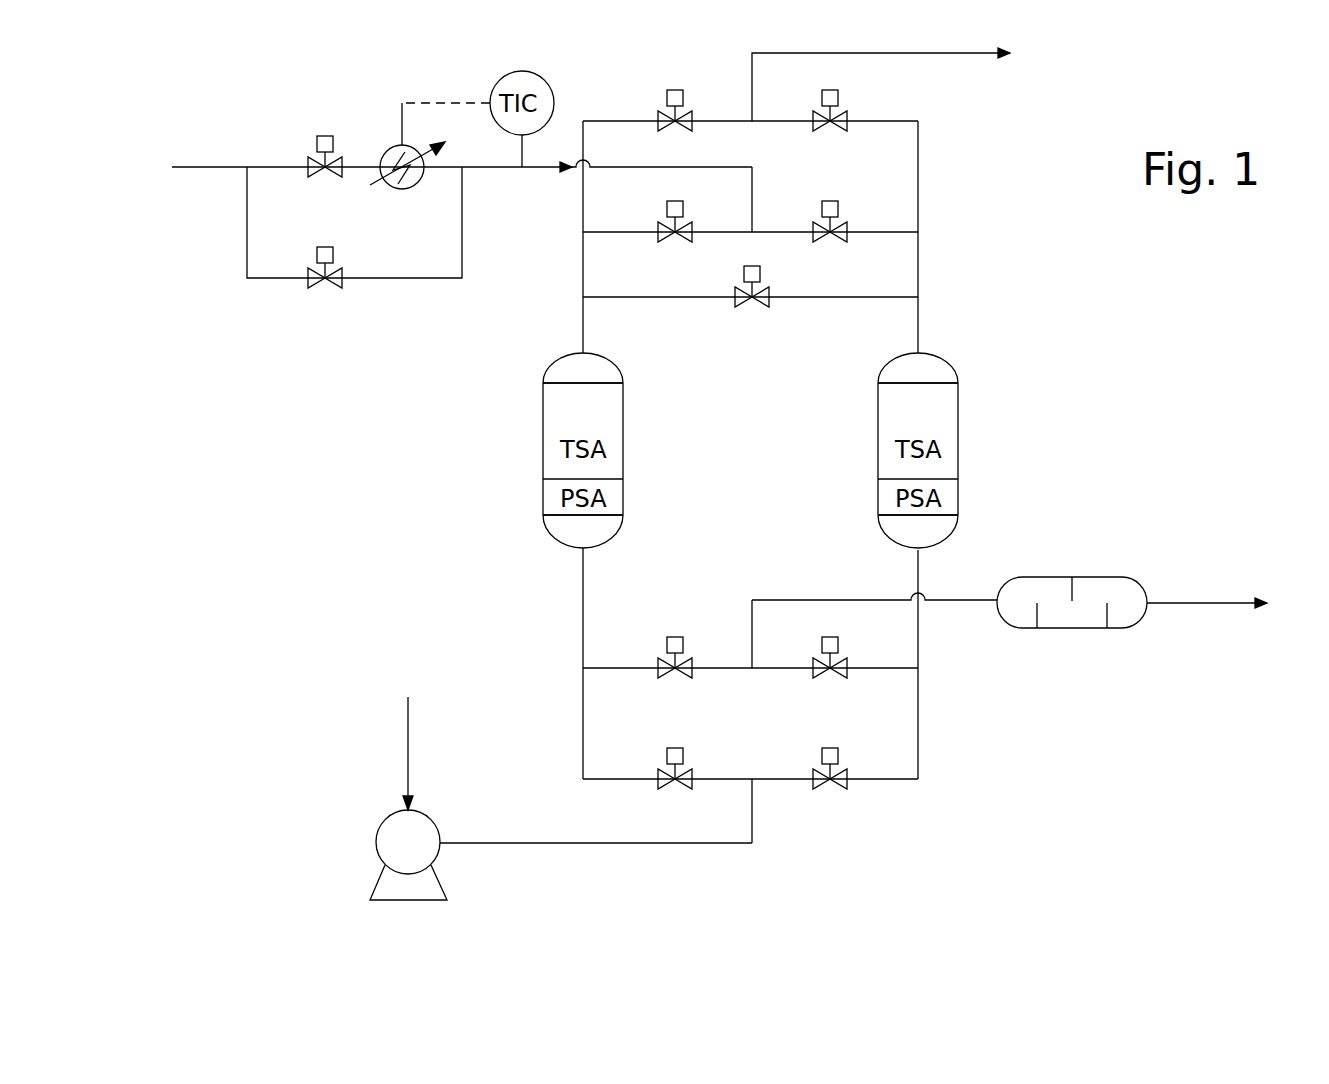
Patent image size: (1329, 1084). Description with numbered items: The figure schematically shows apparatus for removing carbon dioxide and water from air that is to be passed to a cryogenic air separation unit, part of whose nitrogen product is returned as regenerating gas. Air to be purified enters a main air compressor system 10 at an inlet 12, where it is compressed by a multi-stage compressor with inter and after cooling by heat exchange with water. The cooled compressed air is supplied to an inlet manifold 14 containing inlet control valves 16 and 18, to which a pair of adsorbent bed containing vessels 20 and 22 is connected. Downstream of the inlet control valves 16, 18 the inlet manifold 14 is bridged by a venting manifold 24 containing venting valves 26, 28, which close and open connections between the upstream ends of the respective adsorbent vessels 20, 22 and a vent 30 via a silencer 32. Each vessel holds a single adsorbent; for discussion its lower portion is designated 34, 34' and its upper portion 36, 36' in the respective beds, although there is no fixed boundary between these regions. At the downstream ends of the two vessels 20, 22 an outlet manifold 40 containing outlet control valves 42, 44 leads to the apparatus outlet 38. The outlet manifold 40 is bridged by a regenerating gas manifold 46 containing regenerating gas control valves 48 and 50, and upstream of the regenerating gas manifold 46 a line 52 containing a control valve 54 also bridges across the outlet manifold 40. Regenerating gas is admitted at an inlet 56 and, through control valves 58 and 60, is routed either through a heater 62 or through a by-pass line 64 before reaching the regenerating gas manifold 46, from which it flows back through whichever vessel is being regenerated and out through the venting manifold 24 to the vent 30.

The main air compressor system 10 is at (385, 820).
The inlet 12 is at (408, 710).
The inlet manifold 14 is at (868, 780).
The inlet control valve 16 is at (660, 772).
The inlet control valve 18 is at (815, 772).
The adsorbent bed containing vessel 20 is at (621, 450).
The adsorbent bed containing vessel 22 is at (959, 450).
The venting manifold 24 is at (727, 670).
The venting valve 26 is at (660, 662).
The venting valve 28 is at (845, 660).
The vent 30 is at (1268, 603).
The silencer 32 is at (1095, 577).
The lower portion of the adsorbent 34 is at (614, 501).
The lower portion of the adsorbent 34' is at (955, 502).
The upper portion of the adsorbent 36 is at (619, 397).
The upper portion of the adsorbent 36' is at (959, 390).
The outlet 38 is at (1003, 50).
The outlet manifold 40 is at (870, 121).
The outlet control valve 42 is at (665, 115).
The outlet control valve 44 is at (818, 115).
The regenerating gas manifold 46 is at (640, 231).
The regenerating gas control valve 48 is at (693, 227).
The regenerating gas control valve 50 is at (850, 227).
The line 52 is at (820, 297).
The control valve 54 is at (735, 290).
The inlet for regenerating gas 56 is at (215, 167).
The control valve 58 is at (307, 165).
The control valve 60 is at (311, 268).
The heater 62 is at (406, 190).
The by-pass line 64 is at (462, 258).